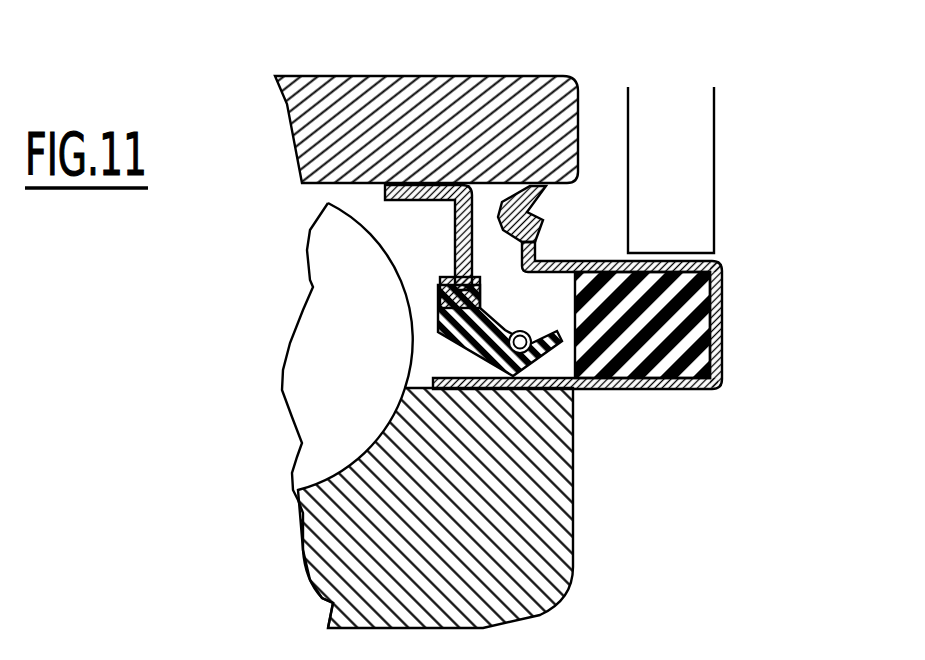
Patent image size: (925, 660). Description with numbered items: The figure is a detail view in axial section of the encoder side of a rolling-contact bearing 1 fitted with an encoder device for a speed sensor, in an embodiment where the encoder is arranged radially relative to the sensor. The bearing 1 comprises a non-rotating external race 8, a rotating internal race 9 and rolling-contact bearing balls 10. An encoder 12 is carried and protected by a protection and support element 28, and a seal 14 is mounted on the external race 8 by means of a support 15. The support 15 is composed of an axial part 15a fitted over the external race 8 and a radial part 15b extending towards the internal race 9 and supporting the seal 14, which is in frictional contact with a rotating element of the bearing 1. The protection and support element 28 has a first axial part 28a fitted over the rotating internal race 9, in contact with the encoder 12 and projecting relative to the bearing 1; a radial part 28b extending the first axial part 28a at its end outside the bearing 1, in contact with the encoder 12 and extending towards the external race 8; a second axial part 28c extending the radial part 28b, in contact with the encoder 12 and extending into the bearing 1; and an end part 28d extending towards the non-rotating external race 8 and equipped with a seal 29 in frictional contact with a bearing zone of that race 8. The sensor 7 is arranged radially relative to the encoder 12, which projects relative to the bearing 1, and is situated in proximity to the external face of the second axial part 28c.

The bearing 1 is at (268, 319).
The sensor 7 is at (680, 138).
The non-rotating external race 8 is at (348, 128).
The rotating internal race 9 is at (533, 522).
The rolling-contact bearing balls 10 is at (328, 418).
The encoder 12 is at (695, 325).
The flexible seal 14 is at (465, 353).
The support 15 is at (353, 154).
The axial part 15a is at (427, 190).
The radial part 15b is at (453, 253).
The protection and support element 28 is at (618, 329).
The first axial part 28a is at (626, 392).
The radial part 28b is at (720, 357).
The second axial part 28c is at (715, 277).
The end part 28d is at (540, 257).
The seal 29 is at (531, 252).